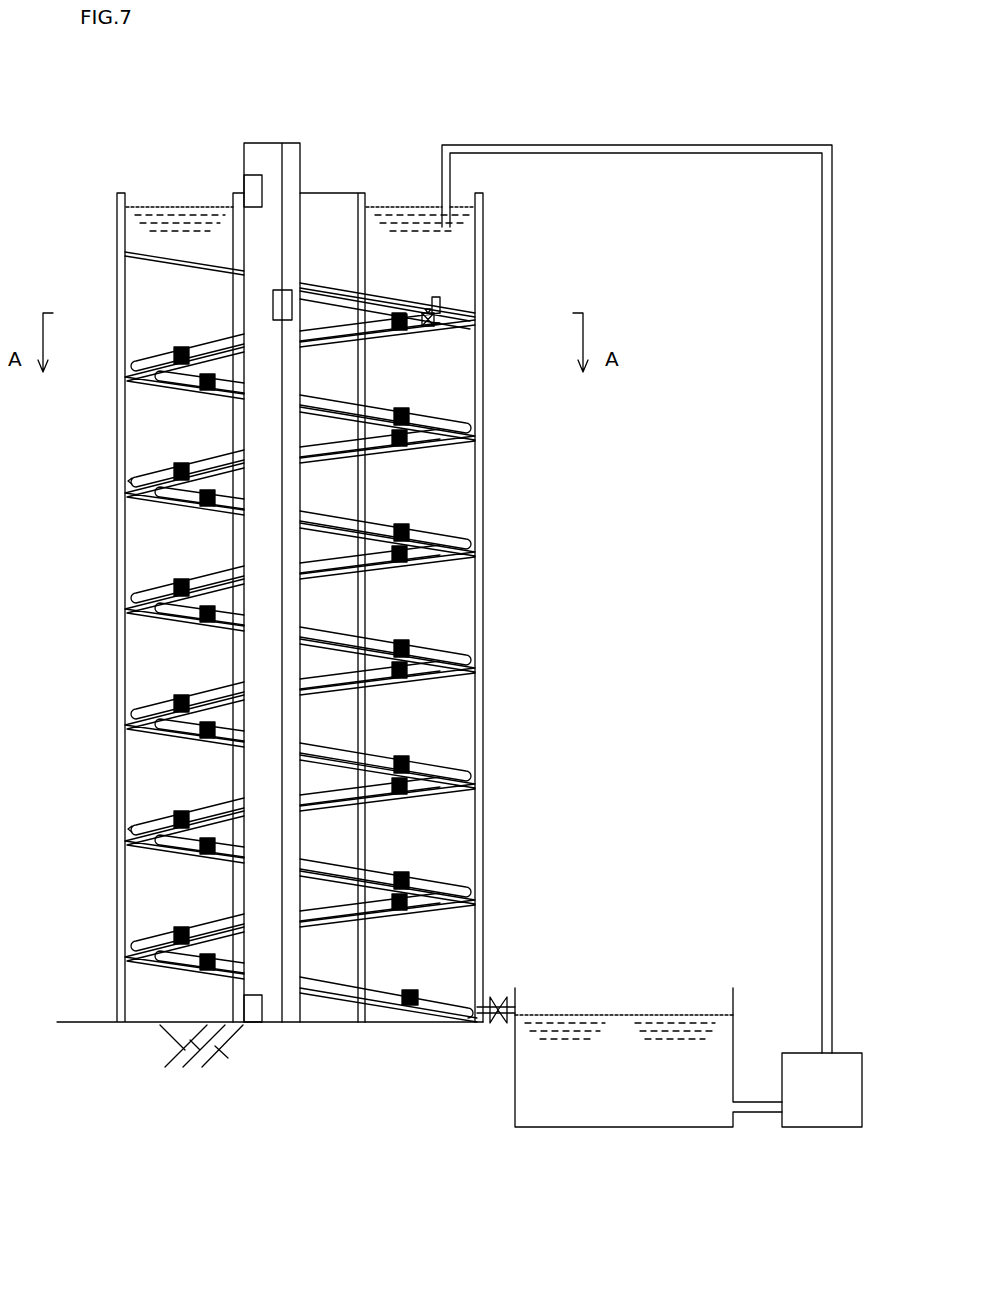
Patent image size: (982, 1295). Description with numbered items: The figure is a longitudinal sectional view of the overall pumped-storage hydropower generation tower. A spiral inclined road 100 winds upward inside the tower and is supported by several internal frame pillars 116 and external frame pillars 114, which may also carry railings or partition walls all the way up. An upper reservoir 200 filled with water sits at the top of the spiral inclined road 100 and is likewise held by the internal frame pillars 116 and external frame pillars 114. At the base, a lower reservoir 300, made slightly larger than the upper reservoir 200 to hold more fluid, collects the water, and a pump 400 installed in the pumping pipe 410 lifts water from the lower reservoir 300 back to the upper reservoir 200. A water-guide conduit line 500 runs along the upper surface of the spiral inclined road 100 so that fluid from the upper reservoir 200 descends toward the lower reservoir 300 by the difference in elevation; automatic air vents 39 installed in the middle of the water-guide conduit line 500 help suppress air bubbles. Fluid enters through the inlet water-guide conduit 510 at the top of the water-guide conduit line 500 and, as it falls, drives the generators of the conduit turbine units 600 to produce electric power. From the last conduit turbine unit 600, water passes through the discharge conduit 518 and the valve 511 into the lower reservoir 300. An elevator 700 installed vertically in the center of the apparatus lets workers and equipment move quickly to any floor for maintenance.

The automatic air vent 39 is at (137, 478).
The spiral inclined road 100 is at (150, 620).
The external frame pillar 114 is at (484, 605).
The internal frame pillar 116 is at (359, 718).
The upper reservoir 200 is at (133, 235).
The lower reservoir 300 is at (532, 1110).
The pump 400 is at (798, 1112).
The pumping pipe 410 is at (822, 520).
The water-guide conduit line 500 is at (455, 420).
The inlet water-guide conduit 510 is at (438, 300).
The valve 511 is at (422, 328).
The discharge conduit 518 is at (442, 1007).
The conduit turbine unit 600 is at (428, 523).
The elevator 700 is at (261, 152).